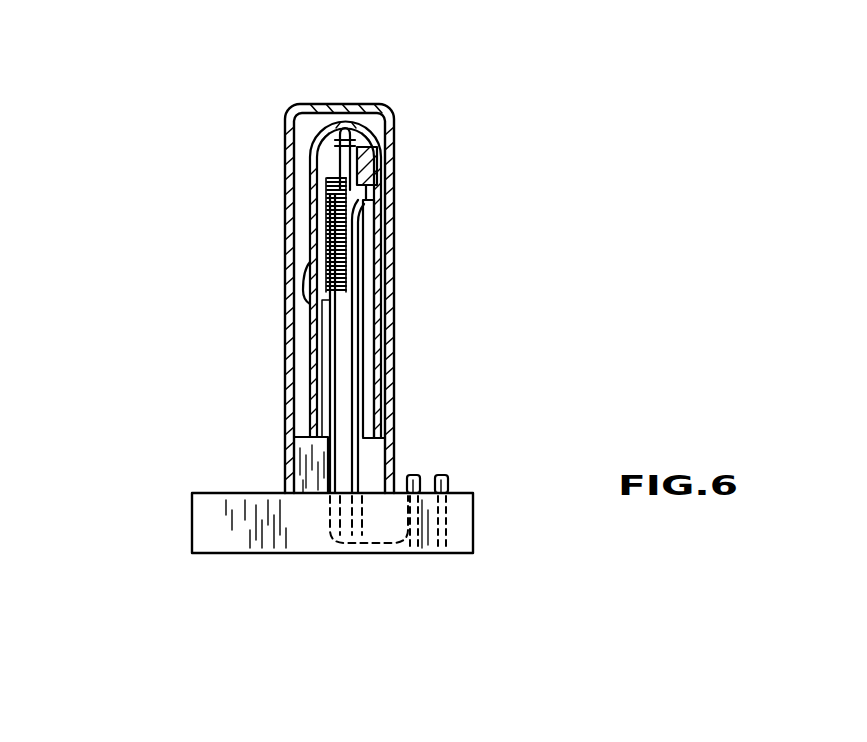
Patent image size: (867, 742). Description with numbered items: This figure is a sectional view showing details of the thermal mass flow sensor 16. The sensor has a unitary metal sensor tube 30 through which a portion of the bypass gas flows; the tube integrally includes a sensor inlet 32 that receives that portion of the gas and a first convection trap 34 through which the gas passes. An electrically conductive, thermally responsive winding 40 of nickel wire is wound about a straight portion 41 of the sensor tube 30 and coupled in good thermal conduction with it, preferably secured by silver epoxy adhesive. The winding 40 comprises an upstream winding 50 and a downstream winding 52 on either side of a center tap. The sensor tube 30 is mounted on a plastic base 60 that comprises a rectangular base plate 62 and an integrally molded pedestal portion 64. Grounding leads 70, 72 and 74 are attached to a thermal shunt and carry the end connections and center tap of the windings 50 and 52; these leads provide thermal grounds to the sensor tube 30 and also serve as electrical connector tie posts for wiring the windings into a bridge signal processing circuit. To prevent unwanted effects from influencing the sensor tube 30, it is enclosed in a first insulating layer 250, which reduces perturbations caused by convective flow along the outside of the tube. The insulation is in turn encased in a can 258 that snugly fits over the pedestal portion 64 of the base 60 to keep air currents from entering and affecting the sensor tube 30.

The can 258 is at (303, 105).
The sensor tube 30 is at (338, 122).
The downstream winding 52 is at (392, 155).
The winding 40 is at (392, 180).
The grounding lead 74 is at (392, 205).
The grounding lead 72 is at (392, 232).
The straight portion 41 is at (392, 250).
The upstream winding 50 is at (392, 289).
The first insulating layer 250 is at (300, 298).
The first convection trap 34 is at (302, 330).
The grounding lead 70 is at (358, 351).
The pedestal portion 64 is at (283, 456).
The thermal mass flow sensor 16 is at (235, 491).
The base 60 is at (212, 522).
The base plate 62 is at (238, 540).
The sensor inlet 32 is at (334, 556).